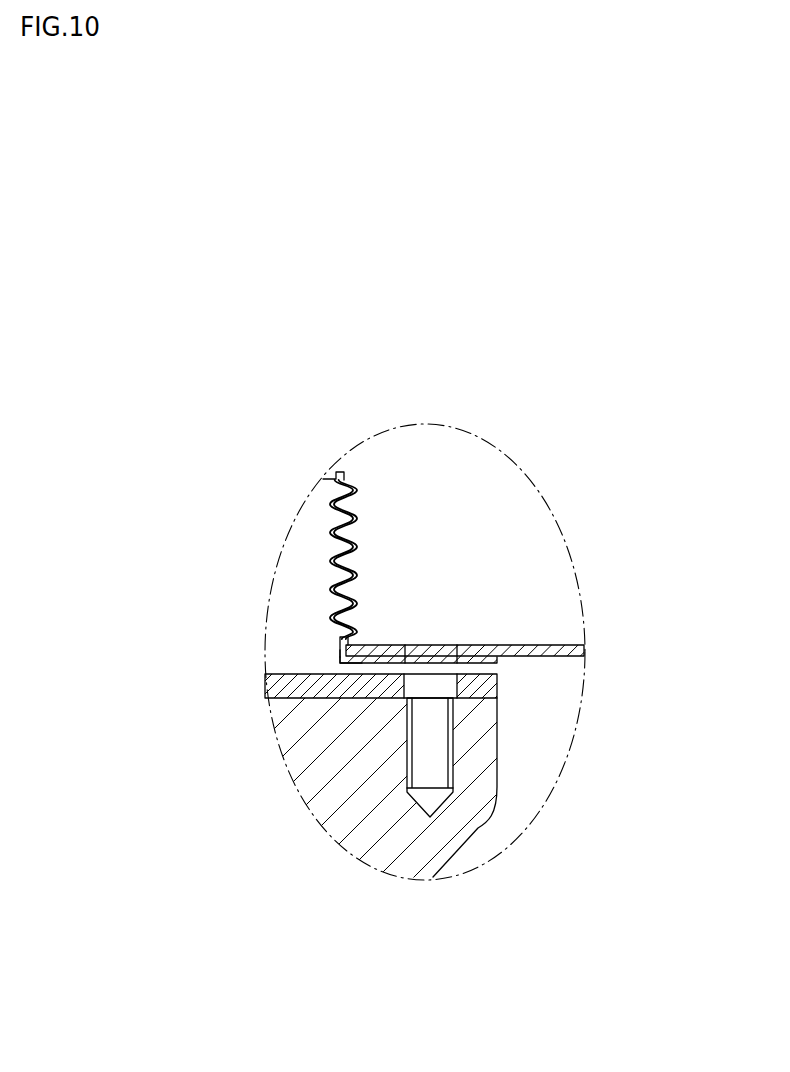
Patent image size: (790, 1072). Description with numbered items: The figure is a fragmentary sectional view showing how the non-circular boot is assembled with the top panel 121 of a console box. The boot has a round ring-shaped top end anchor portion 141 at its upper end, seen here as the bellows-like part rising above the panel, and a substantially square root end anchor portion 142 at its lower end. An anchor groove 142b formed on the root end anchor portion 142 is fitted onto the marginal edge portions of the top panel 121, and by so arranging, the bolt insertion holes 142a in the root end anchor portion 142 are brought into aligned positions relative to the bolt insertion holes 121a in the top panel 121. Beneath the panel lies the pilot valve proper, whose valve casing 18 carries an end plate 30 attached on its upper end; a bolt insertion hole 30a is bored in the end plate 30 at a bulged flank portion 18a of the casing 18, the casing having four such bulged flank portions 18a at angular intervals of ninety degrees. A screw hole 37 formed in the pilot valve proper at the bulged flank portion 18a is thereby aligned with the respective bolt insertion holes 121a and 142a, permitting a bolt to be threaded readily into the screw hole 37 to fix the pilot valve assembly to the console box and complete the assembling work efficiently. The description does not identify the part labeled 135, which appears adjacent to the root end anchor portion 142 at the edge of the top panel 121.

The valve casing 18 is at (407, 853).
The bulged flank portions 18a is at (480, 790).
The end plate 30 is at (270, 687).
The bolt insertion hole 30a is at (433, 691).
The screw hole 37 is at (457, 740).
The top panel 121 is at (540, 657).
The bolt insertion hole 121a is at (407, 650).
The bracket bottom end 135 is at (343, 647).
The top end anchor portion 141 is at (330, 533).
The root end anchor portion 142 is at (400, 655).
The bolt insertion hole 142a is at (457, 657).
The anchor groove 142b is at (337, 635).